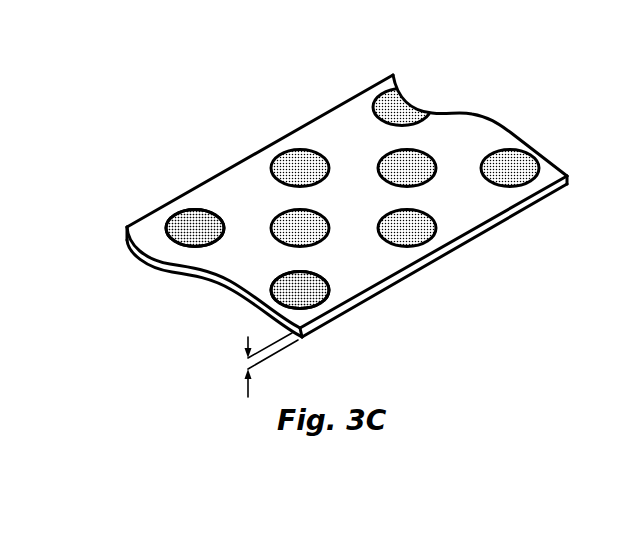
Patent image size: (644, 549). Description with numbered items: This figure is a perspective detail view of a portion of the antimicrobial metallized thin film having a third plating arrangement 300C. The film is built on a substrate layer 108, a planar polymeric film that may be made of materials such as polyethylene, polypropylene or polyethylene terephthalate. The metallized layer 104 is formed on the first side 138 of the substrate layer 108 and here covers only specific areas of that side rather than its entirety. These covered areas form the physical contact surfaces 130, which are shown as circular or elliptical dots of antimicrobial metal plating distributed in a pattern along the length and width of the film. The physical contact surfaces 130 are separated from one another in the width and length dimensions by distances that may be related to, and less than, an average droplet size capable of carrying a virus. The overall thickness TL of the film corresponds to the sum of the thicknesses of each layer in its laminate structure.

The third plating arrangement 300C is at (304, 52).
The physical contact surface 130 is at (297, 163).
The metallized layer 104 is at (263, 290).
The first side 138 is at (463, 137).
The substrate layer 108 is at (487, 230).
The overall thickness TL is at (247, 336).